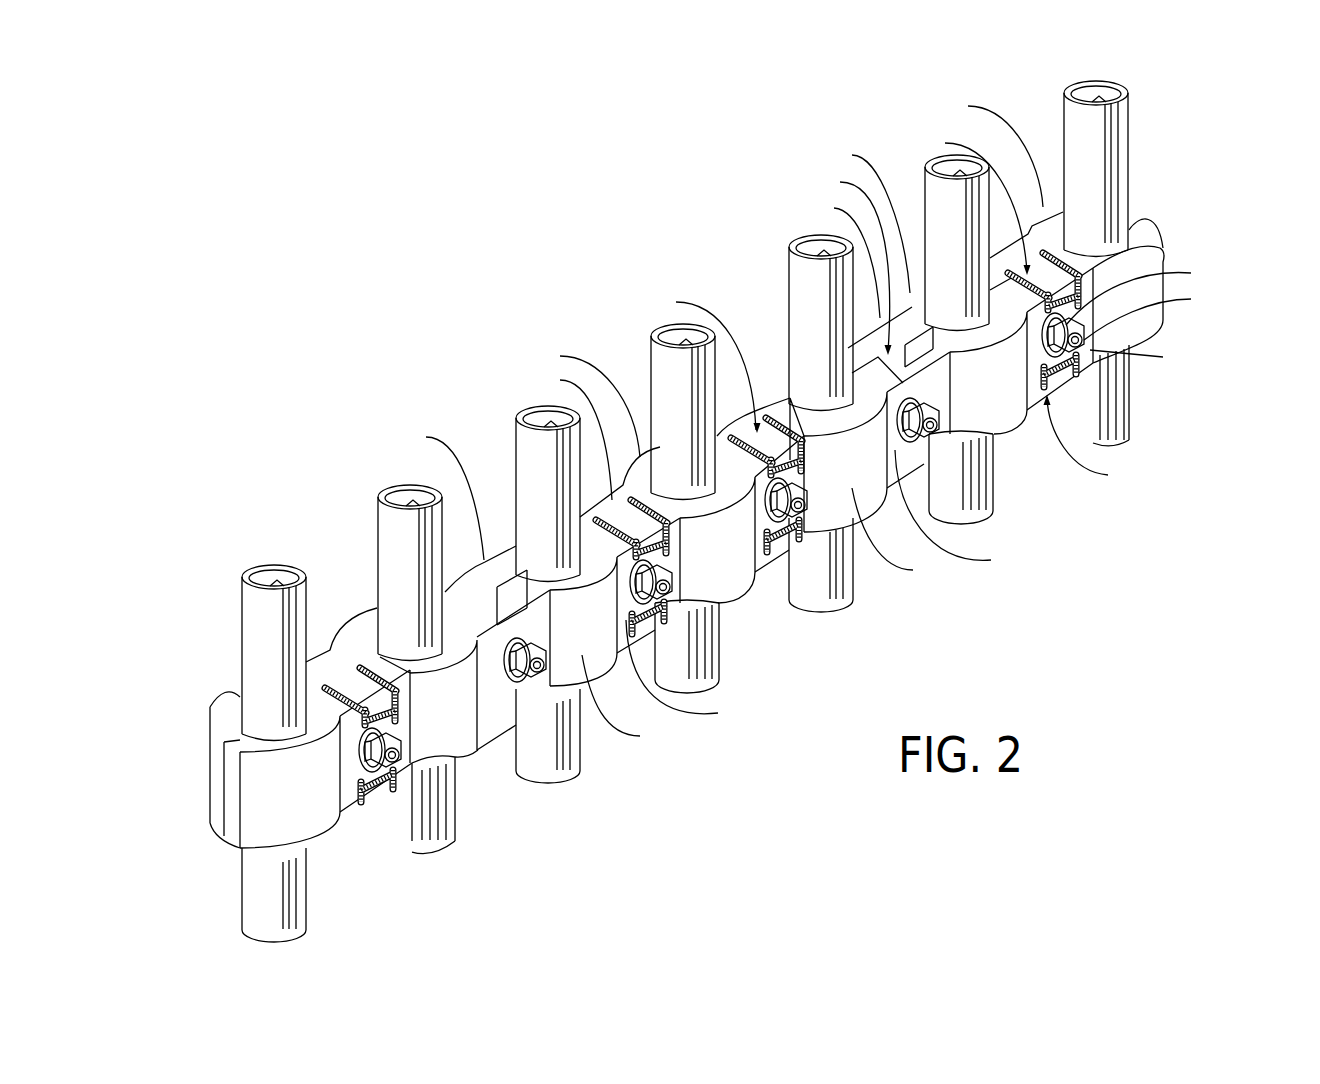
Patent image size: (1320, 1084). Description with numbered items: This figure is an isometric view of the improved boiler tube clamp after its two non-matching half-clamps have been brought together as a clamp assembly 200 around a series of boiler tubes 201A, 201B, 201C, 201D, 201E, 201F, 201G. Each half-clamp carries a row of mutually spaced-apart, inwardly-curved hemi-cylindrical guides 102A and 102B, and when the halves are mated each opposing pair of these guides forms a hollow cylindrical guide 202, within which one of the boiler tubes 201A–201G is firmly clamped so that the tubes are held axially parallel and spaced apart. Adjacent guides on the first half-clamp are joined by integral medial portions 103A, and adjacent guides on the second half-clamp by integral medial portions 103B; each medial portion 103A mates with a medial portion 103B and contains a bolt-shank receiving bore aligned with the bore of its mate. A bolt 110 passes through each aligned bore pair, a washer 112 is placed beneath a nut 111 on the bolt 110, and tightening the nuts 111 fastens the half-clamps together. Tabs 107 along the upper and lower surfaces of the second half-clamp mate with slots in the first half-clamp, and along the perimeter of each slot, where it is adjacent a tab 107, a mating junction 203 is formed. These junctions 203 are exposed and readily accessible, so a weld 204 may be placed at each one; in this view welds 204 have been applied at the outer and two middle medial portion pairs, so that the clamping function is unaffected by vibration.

The clamp assembly 200 is at (1165, 186).
The boiler tube 201A is at (260, 618).
The boiler tube 201B is at (397, 527).
The boiler tube 201C is at (532, 450).
The boiler tube 201D is at (657, 367).
The boiler tube 201E is at (800, 283).
The boiler tube 201F is at (933, 203).
The boiler tube 201G is at (1064, 117).
The hemi-cylindrical guide 102A is at (307, 813).
The hemi-cylindrical guide 102B is at (366, 616).
The medial portion 103A is at (352, 778).
The medial portion 103B is at (336, 646).
The tab 107 is at (967, 417).
The bolt 110 is at (393, 758).
The nut 111 is at (508, 690).
The washer 112 is at (498, 684).
The cylindrical guide 202 is at (757, 390).
The mating junction 203 is at (482, 600).
The weld 204 is at (330, 705).